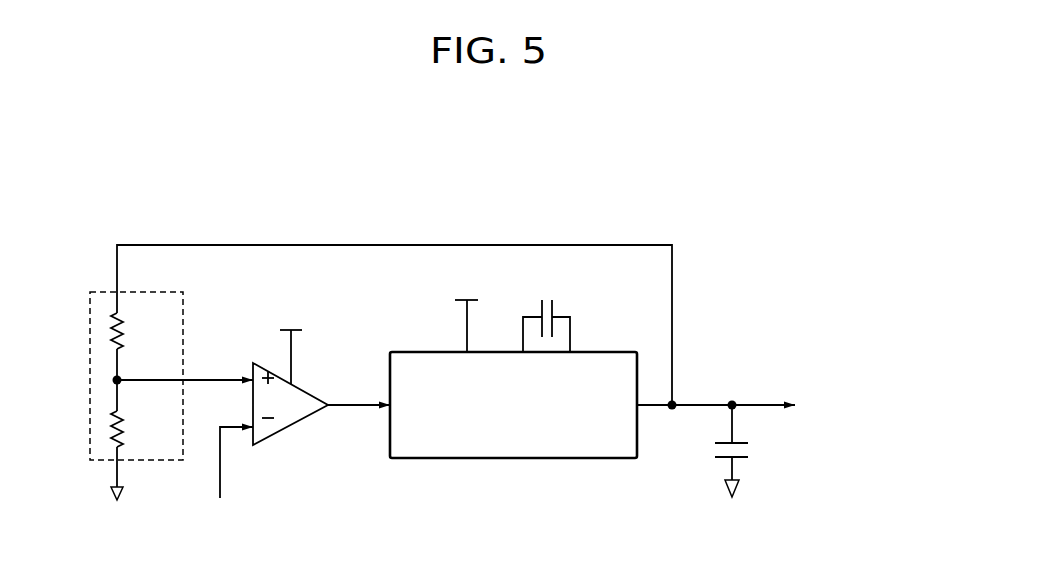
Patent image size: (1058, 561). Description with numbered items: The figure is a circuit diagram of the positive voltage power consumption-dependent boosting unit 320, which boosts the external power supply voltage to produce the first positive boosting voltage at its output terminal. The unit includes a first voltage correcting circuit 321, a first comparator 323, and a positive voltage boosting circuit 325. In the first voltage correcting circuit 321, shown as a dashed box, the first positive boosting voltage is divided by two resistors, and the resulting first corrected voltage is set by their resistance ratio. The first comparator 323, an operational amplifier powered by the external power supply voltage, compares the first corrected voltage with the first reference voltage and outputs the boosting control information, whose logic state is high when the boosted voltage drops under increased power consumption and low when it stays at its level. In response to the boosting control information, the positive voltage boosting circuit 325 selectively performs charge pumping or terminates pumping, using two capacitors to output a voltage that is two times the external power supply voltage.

The positive voltage power consumption-dependent boosting unit 320 is at (768, 189).
The first voltage correcting circuit 321 is at (137, 292).
The first comparator 323 is at (292, 425).
The positive voltage boosting circuit 325 is at (512, 458).